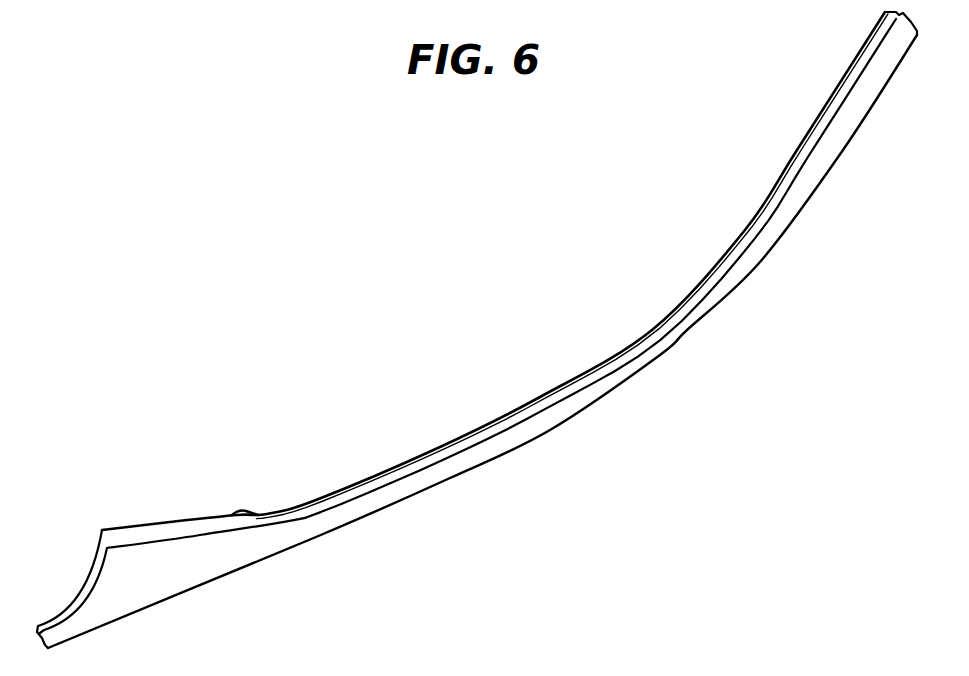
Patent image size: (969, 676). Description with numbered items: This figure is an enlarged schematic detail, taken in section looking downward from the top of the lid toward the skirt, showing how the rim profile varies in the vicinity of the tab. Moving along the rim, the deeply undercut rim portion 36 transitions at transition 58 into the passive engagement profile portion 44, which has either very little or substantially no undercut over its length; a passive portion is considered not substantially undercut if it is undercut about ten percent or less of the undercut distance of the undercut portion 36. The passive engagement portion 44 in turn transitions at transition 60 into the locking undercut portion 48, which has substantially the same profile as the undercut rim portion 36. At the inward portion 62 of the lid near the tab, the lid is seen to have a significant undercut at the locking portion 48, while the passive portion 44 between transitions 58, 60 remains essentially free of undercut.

The undercut portion 36 is at (831, 101).
The passive engagement profile portion 44 is at (448, 449).
The locking undercut portion 48 is at (222, 528).
The transition 58 is at (707, 219).
The transition 60 is at (244, 485).
The inward portion 62 is at (131, 487).